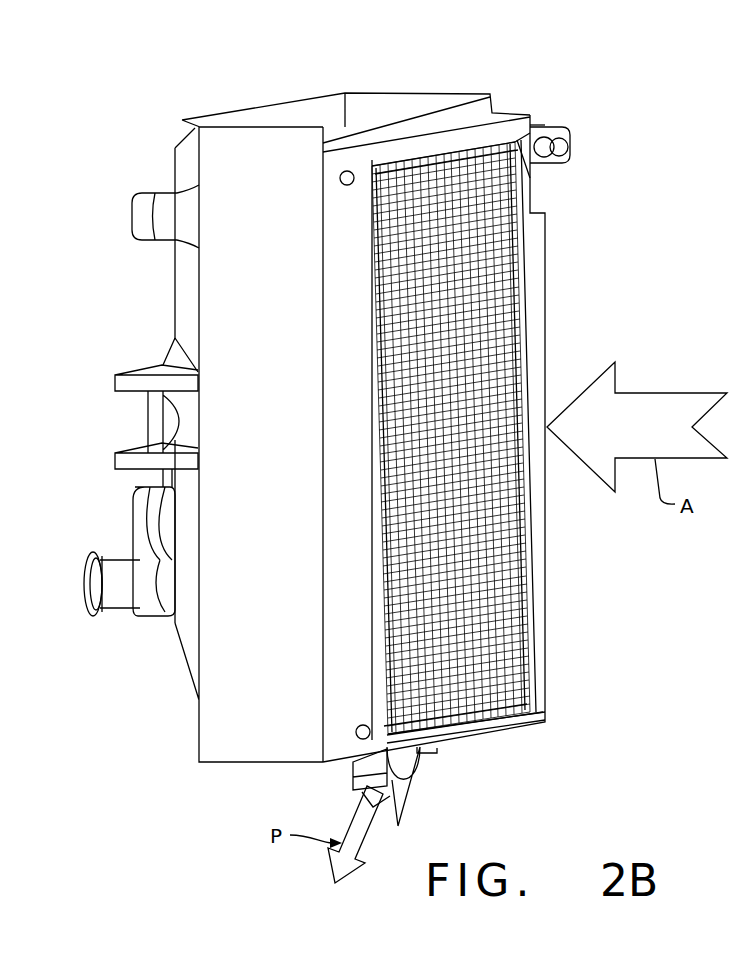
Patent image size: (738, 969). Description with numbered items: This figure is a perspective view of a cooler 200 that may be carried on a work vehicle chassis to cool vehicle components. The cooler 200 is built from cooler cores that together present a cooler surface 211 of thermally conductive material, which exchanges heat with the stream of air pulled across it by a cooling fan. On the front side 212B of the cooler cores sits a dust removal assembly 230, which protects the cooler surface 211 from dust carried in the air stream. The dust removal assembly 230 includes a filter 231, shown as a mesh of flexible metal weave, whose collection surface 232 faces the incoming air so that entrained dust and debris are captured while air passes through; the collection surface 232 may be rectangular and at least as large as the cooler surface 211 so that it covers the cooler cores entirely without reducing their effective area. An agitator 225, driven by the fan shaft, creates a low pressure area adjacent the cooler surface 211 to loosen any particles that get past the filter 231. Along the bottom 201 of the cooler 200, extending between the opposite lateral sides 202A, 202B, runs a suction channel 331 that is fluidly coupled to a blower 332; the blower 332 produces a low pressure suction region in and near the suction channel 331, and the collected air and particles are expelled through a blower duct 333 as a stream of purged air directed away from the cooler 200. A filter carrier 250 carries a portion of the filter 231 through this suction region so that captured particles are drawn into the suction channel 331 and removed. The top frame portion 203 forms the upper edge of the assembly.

The cooler 200 is at (170, 119).
The bottom 201 is at (510, 722).
The lateral side 202A is at (540, 312).
The lateral side 202B is at (345, 398).
The top frame portion 203 is at (350, 140).
The cooler surface 211 is at (380, 487).
The opposite side 212B is at (375, 330).
The agitator 225 is at (410, 165).
The dust removal assembly 230 is at (577, 265).
The filter 231 is at (530, 665).
The collection surface 232 is at (535, 572).
The filter carrier 250 is at (552, 180).
The suction channel 331 is at (445, 730).
The blower 332 is at (408, 766).
The blower duct 333 is at (352, 782).